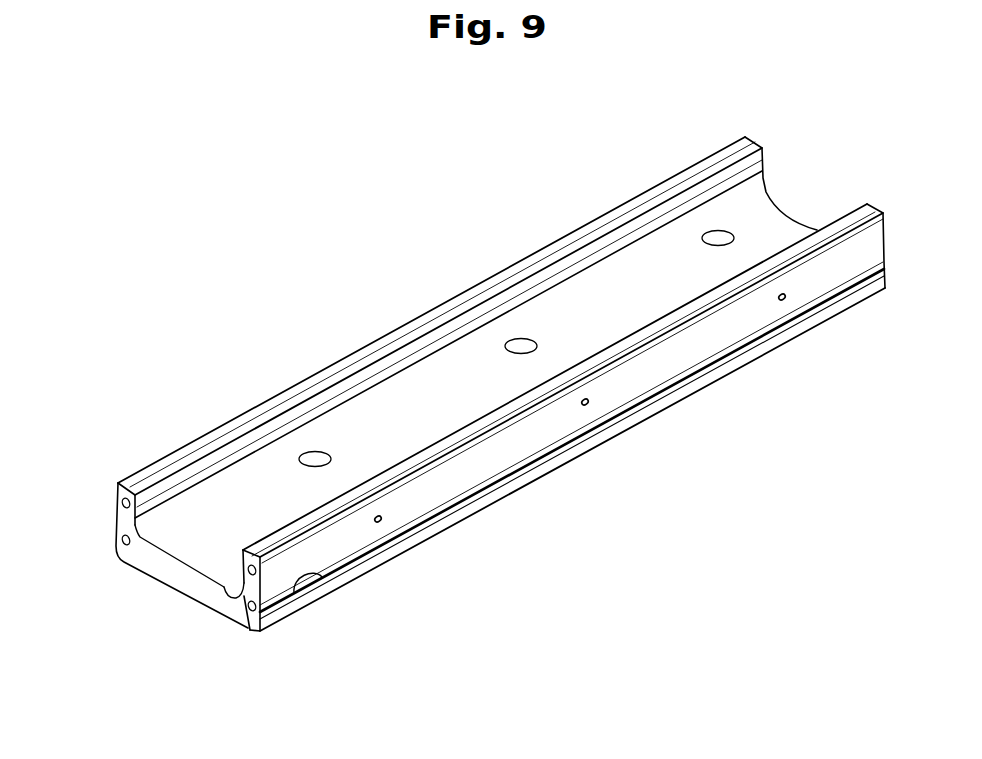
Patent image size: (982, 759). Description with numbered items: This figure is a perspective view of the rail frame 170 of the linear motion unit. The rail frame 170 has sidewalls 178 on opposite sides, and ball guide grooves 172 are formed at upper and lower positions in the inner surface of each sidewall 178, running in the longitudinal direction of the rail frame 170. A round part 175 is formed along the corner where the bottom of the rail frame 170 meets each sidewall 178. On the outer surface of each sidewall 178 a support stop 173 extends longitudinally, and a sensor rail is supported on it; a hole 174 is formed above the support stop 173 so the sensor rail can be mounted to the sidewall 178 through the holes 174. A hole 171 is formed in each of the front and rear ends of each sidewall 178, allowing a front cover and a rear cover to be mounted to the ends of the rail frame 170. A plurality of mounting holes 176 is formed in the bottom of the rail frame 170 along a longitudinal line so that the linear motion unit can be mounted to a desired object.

The rail frame 170 is at (413, 200).
The hole 171 is at (251, 610).
The ball guide groove 172 is at (119, 527).
The support stop 173 is at (319, 581).
The hole 174 is at (589, 407).
The round part 175 is at (227, 594).
The mounting hole 176 is at (316, 453).
The sidewall 178 is at (155, 472).